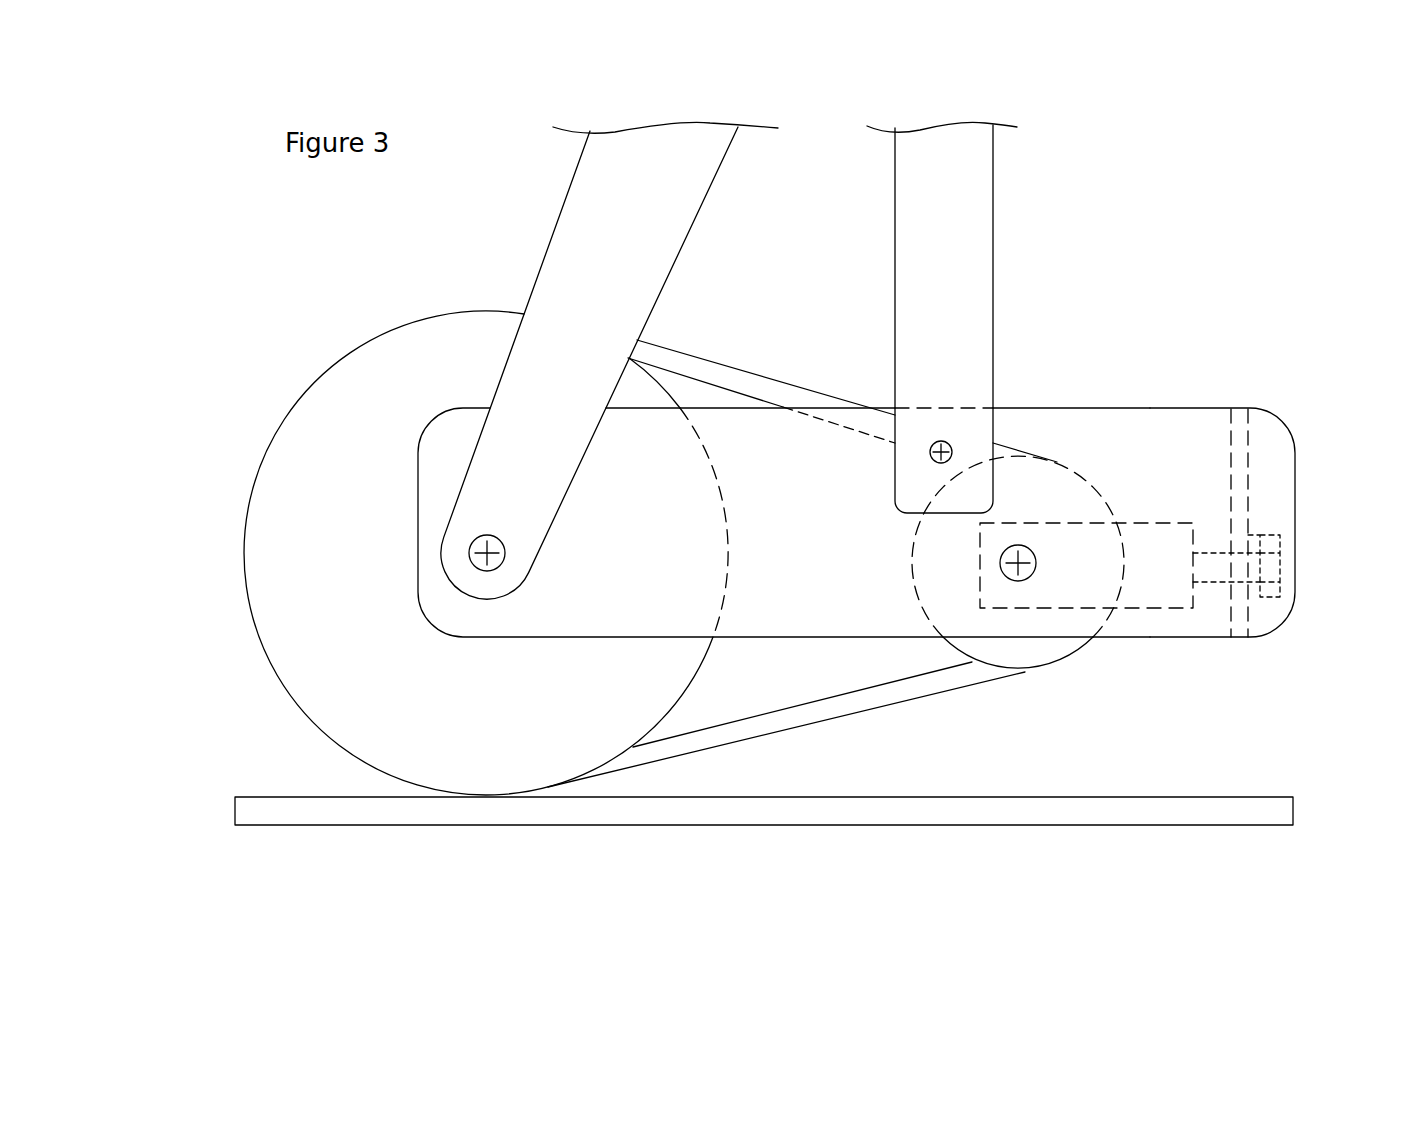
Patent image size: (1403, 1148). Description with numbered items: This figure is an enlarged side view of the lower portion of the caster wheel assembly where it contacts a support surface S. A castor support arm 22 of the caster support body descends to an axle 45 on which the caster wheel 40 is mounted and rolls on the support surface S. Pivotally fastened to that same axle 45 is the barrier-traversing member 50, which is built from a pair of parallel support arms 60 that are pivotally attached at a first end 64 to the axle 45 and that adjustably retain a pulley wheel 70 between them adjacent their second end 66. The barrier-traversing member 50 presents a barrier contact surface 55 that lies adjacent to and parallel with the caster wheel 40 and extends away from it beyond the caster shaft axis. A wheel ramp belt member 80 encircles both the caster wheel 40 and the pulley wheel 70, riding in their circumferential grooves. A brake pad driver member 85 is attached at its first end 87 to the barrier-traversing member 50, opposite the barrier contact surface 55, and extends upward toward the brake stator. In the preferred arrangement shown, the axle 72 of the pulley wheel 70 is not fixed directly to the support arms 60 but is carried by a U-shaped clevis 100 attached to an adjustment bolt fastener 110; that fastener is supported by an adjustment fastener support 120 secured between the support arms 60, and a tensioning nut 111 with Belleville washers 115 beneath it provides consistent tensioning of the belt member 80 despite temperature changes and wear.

The castor support arms 22 is at (570, 317).
The caster wheel 40 is at (403, 367).
The axle 45 is at (472, 545).
The barrier-traversing member 50 is at (879, 454).
The barrier contact surface 55 is at (877, 710).
The support arms 60 is at (828, 500).
The first end 64 is at (600, 448).
The second end 66 is at (1190, 460).
The pulley wheel 70 is at (1037, 655).
The axle 72 is at (1022, 568).
The wheel ramp belt member 80 is at (747, 387).
The brake pad driver member 85 is at (995, 200).
The first end 87 is at (965, 425).
The U-shaped clevis 100 is at (1145, 593).
The adjustment bolt fastener 110 is at (1209, 563).
The tensioning nut 111 is at (1273, 535).
The Belleville washers 115 is at (1253, 592).
The adjustment fastener support 120 is at (1238, 627).
The support surface S is at (852, 808).